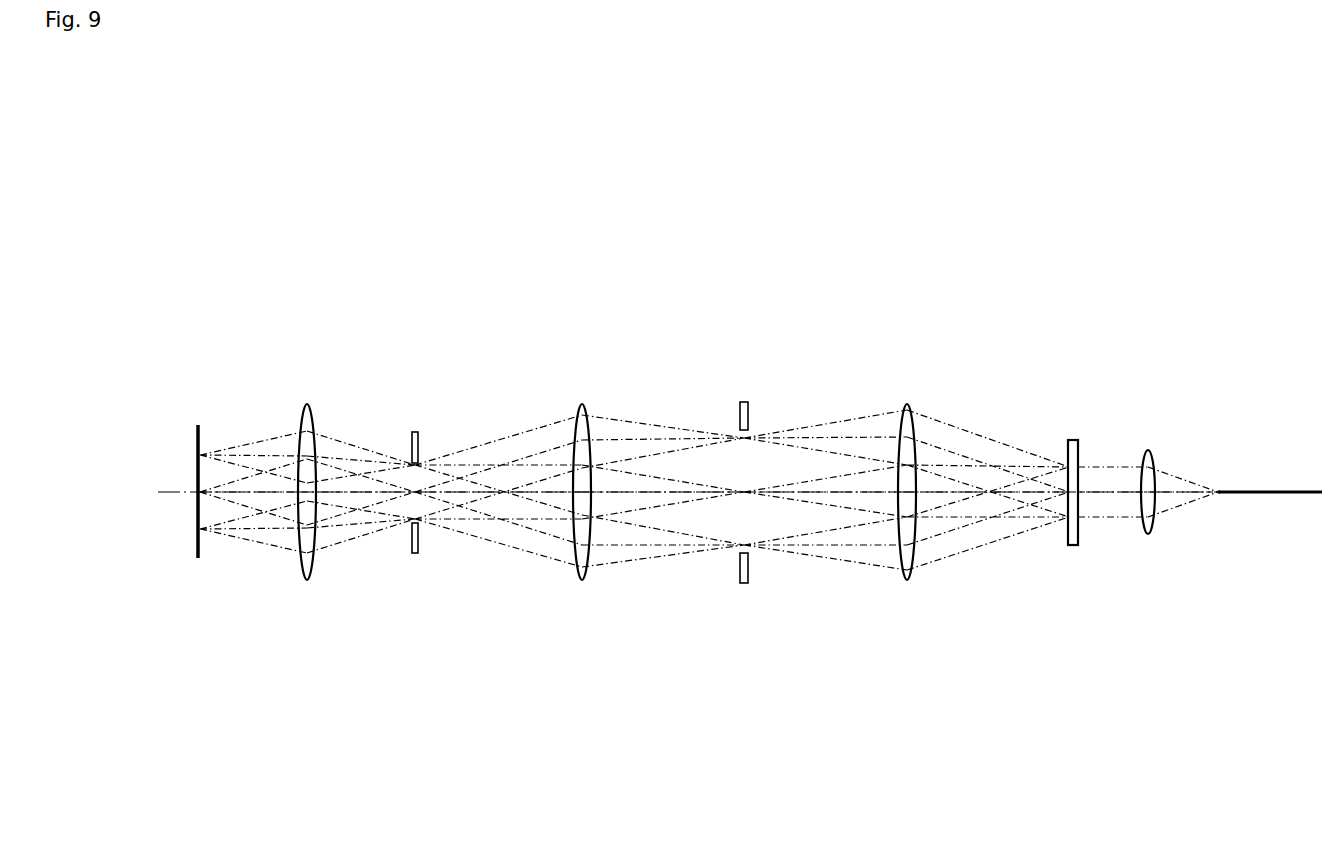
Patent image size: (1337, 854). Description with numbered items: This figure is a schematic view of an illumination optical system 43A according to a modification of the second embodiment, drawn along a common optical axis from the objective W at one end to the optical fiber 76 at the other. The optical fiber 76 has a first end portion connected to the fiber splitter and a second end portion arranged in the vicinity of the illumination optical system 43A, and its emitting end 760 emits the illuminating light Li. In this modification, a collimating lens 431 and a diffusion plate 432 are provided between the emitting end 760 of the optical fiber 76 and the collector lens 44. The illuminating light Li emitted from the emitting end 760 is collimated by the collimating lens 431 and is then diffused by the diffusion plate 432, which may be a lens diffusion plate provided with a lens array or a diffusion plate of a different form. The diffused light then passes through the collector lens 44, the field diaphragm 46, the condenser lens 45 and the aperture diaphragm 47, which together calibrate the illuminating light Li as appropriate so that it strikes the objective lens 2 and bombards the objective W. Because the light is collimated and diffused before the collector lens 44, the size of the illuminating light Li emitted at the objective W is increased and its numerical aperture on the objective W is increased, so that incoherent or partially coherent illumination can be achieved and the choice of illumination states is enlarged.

The objective W is at (198, 426).
The objective lens 2 is at (312, 416).
The illumination optical system 43A is at (850, 287).
The aperture diaphragm 47 is at (414, 430).
The condenser lens 45 is at (582, 405).
The field diaphragm 46 is at (744, 401).
The collector lens 44 is at (907, 404).
The diffusion plate 432 is at (1073, 440).
The collimating lens 431 is at (1148, 450).
The emitting end 760 is at (1219, 490).
The optical fiber 76 is at (1286, 490).
The illuminating light Li is at (1186, 505).